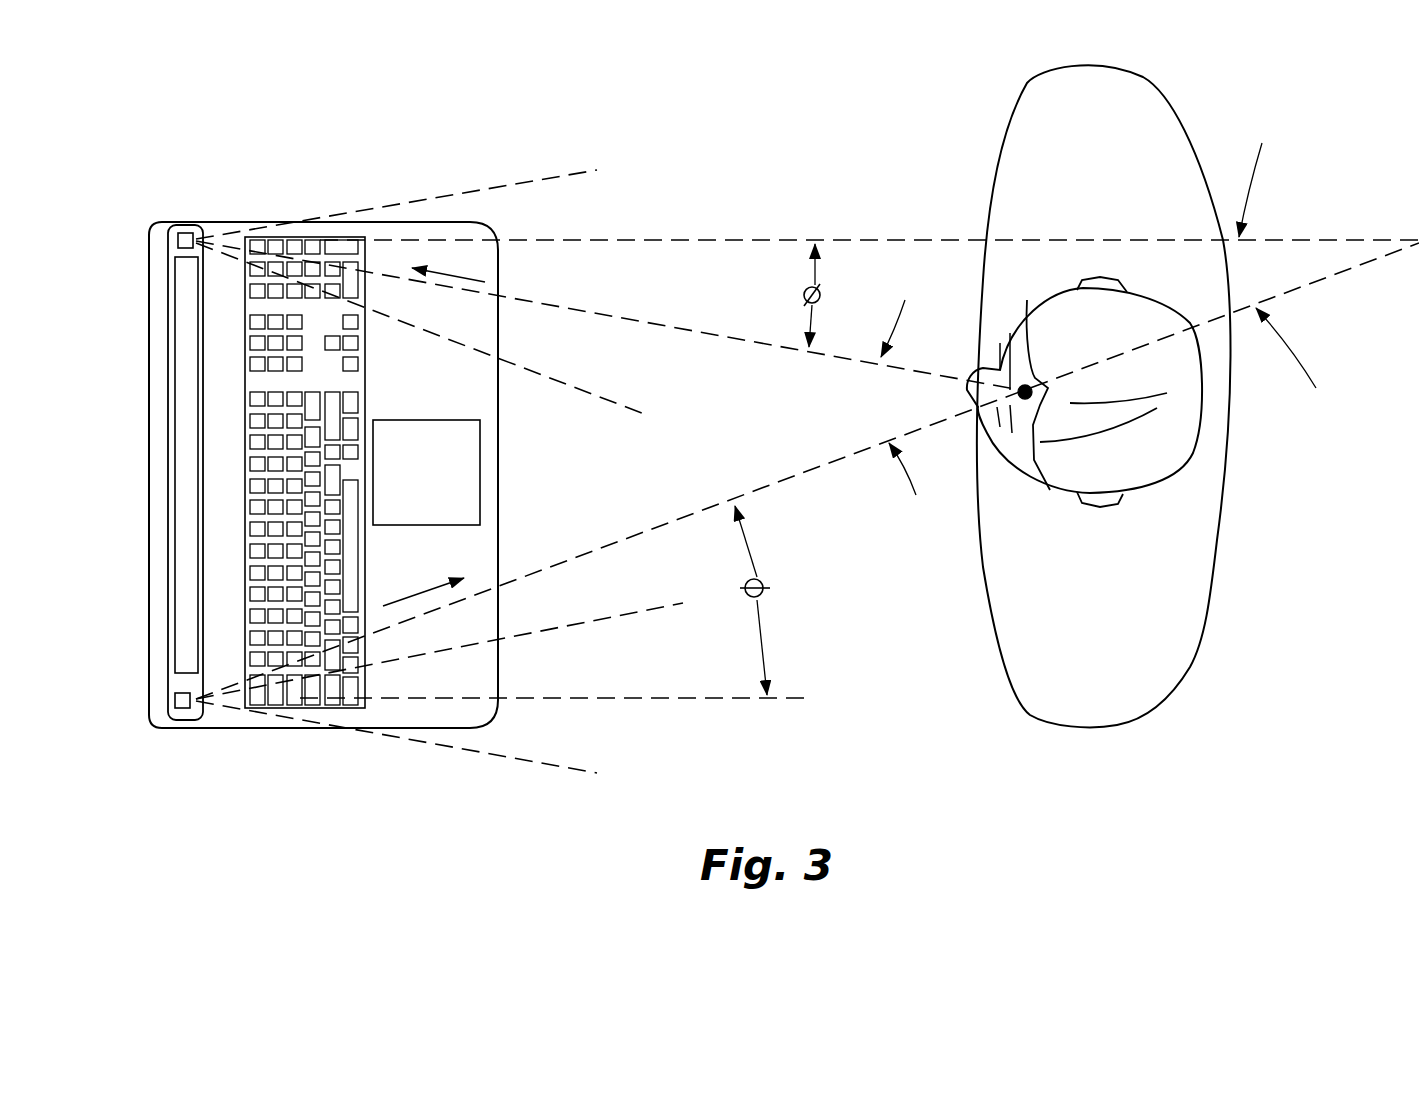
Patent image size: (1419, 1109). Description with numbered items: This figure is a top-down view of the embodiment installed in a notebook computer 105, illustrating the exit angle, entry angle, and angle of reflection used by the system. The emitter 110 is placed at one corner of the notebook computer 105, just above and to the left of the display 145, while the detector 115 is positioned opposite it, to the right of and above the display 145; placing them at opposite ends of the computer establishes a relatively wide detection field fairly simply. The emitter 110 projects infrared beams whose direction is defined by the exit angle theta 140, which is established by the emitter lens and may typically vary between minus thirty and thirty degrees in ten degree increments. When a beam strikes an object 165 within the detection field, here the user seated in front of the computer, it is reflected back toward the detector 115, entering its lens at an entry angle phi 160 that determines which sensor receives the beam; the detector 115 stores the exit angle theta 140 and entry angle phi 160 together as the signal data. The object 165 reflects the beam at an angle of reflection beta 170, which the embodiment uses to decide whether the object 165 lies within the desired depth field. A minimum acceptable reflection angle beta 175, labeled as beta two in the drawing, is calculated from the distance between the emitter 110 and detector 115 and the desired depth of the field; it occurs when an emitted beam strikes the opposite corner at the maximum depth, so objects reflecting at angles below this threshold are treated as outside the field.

The notebook computer 105 is at (477, 223).
The emitter 110 is at (190, 710).
The detector 115 is at (184, 232).
The exit angle θ 140 is at (777, 598).
The display 145 is at (186, 420).
The entry angle φ 160 is at (795, 298).
The object 165 is at (1213, 563).
The angle of reflection β 170 is at (860, 402).
The minimum acceptable reflection angle β 175 is at (1280, 265).